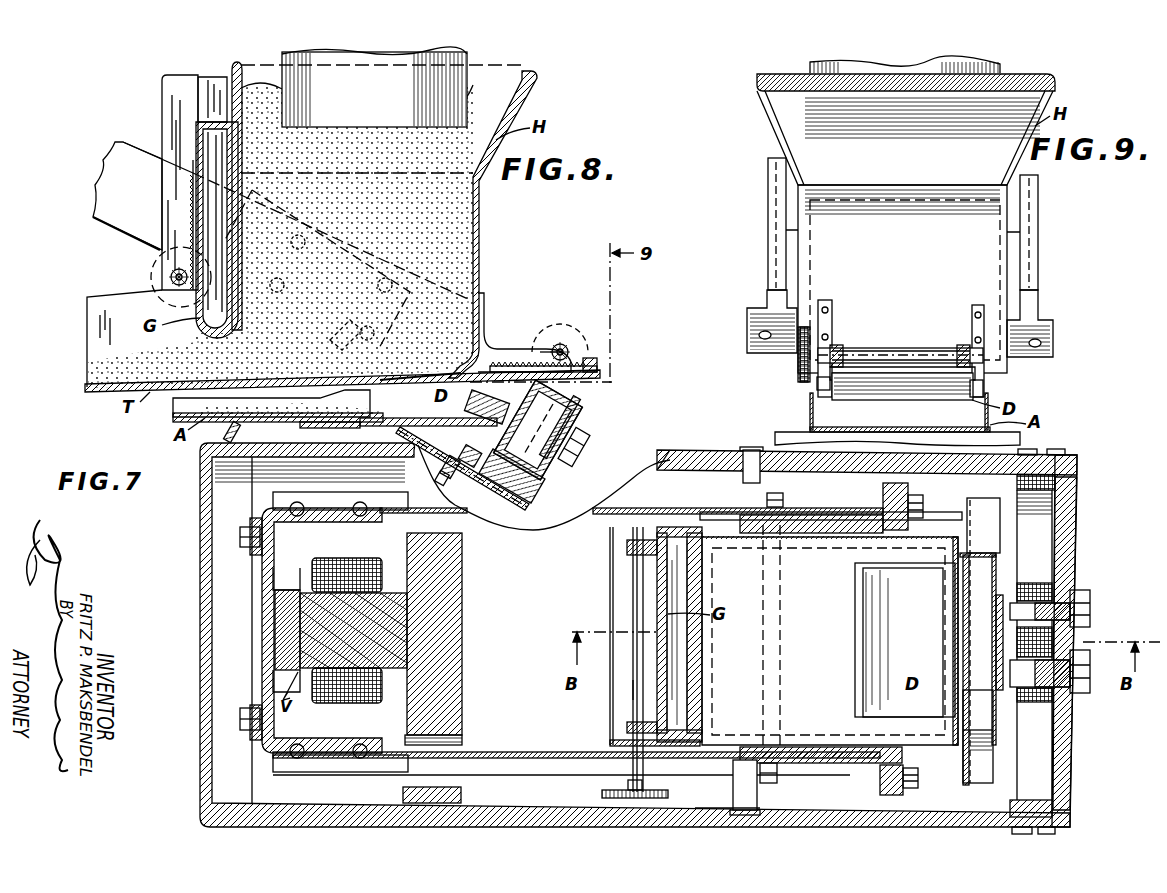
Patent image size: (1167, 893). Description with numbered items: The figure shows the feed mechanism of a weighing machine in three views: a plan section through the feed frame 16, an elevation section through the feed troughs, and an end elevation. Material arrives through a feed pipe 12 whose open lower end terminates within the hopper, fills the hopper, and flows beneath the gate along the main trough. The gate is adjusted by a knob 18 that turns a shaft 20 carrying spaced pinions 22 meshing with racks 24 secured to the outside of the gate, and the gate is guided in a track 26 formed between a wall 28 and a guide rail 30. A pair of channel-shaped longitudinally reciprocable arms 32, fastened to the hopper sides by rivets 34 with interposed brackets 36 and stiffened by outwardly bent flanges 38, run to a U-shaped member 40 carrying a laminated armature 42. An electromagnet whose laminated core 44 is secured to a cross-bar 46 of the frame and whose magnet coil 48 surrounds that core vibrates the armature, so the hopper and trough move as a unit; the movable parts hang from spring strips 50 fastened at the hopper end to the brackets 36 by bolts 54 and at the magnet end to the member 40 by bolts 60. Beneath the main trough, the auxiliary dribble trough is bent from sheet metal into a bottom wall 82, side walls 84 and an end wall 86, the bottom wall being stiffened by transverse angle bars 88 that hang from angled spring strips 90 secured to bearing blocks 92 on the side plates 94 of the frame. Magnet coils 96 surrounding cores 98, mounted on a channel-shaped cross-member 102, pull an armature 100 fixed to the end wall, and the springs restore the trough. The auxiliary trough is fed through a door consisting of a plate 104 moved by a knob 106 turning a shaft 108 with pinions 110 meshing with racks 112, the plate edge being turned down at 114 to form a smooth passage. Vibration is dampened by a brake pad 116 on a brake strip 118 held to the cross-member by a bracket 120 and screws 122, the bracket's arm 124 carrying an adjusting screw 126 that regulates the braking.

In FIG. 8, the feed pipe 12 is at (440, 75).
In FIG. 9, the feed pipe 12 is at (808, 68).
In FIG. 7, the feed frame 16 is at (515, 818).
In FIG. 8, the knob 18 is at (170, 272).
In FIG. 7, the knob 18 is at (602, 793).
In FIG. 8, the shaft 20 is at (158, 286).
In FIG. 7, the shaft 20 is at (633, 680).
In FIG. 8, the pinions 22 is at (158, 247).
In FIG. 7, the pinions 22 is at (627, 548).
In FIG. 8, the racks 24 is at (190, 192).
In FIG. 7, the racks 24 is at (635, 565).
In FIG. 8, the track 26 is at (216, 90).
In FIG. 7, the track 26 is at (665, 548).
In FIG. 8, the wall 28 is at (246, 80).
In FIG. 7, the wall 28 is at (702, 590).
In FIG. 8, the guide rail 30 is at (190, 92).
In FIG. 7, the guide rail 30 is at (610, 548).
In FIG. 8, the longitudinally reciprocable arms 32 is at (128, 140).
In FIG. 9, the longitudinally reciprocable arms 32 is at (768, 244).
In FIG. 7, the longitudinally reciprocable arms 32 is at (505, 748).
In FIG. 7, the rivets 34 is at (860, 515).
In FIG. 9, the brackets 36 is at (770, 299).
In FIG. 7, the brackets 36 is at (815, 535).
In FIG. 7, the flanges 38 is at (350, 500).
In FIG. 7, the U-shaped member 40 is at (266, 598).
In FIG. 7, the laminated armature 42 is at (276, 640).
In FIG. 7, the laminated core 44 is at (410, 630).
In FIG. 7, the cross-bar 46 is at (455, 590).
In FIG. 7, the magnet coil 48 is at (358, 702).
In FIG. 7, the spring strips 50 is at (252, 555).
In FIG. 7, the bolts 54 is at (923, 511).
In FIG. 7, the bolts 60 is at (245, 528).
In FIG. 8, the bottom wall 82 is at (295, 424).
In FIG. 8, the side walls 84 is at (262, 410).
In FIG. 8, the end wall 86 is at (520, 402).
In FIG. 7, the end wall 86 is at (998, 577).
In FIG. 8, the angle bars 88 is at (353, 444).
In FIG. 9, the angle bars 88 is at (1022, 440).
In FIG. 7, the angle bars 88 is at (992, 529).
In FIG. 7, the spring strips 90 is at (770, 500).
In FIG. 7, the bearing blocks 92 is at (750, 460).
In FIG. 7, the side plates 94 is at (705, 460).
In FIG. 8, the magnet coils 96 is at (570, 400).
In FIG. 7, the magnet coils 96 is at (1050, 595).
In FIG. 8, the cores 98 is at (568, 462).
In FIG. 7, the cores 98 is at (1030, 600).
In FIG. 8, the armature 100 is at (486, 407).
In FIG. 7, the armature 100 is at (1000, 697).
In FIG. 8, the channel-shaped cross-member 102 is at (538, 486).
In FIG. 7, the channel-shaped cross-member 102 is at (1068, 736).
In FIG. 8, the plate 104 is at (480, 375).
In FIG. 9, the plate 104 is at (917, 378).
In FIG. 7, the plate 104 is at (974, 712).
In FIG. 8, the knob 106 is at (560, 343).
In FIG. 9, the knob 106 is at (803, 383).
In FIG. 8, the shaft 108 is at (572, 354).
In FIG. 9, the shaft 108 is at (868, 345).
In FIG. 8, the pinions 110 is at (575, 342).
In FIG. 9, the pinions 110 is at (832, 350).
In FIG. 8, the racks 112 is at (598, 363).
In FIG. 9, the racks 112 is at (828, 392).
In FIG. 8, the downwardly turned edge 114 is at (375, 384).
In FIG. 9, the downwardly turned edge 114 is at (884, 397).
In FIG. 8, the brake pad 116 is at (330, 435).
In FIG. 8, the brake strip 118 is at (390, 426).
In FIG. 8, the bracket 120 is at (533, 500).
In FIG. 8, the screws 122 is at (505, 495).
In FIG. 8, the arm 124 is at (463, 461).
In FIG. 8, the adjusting screw 126 is at (450, 482).